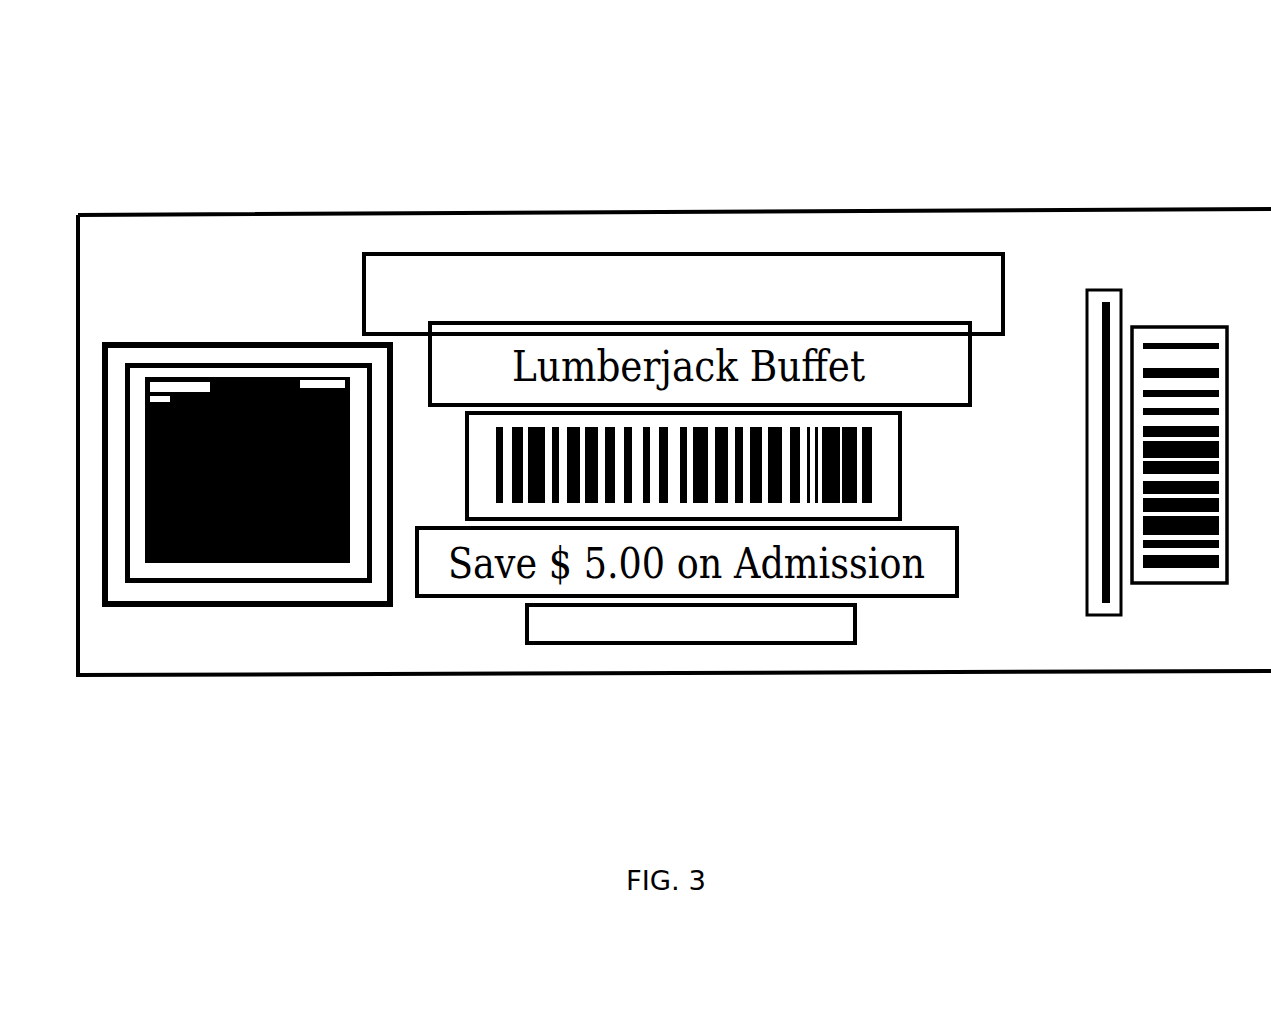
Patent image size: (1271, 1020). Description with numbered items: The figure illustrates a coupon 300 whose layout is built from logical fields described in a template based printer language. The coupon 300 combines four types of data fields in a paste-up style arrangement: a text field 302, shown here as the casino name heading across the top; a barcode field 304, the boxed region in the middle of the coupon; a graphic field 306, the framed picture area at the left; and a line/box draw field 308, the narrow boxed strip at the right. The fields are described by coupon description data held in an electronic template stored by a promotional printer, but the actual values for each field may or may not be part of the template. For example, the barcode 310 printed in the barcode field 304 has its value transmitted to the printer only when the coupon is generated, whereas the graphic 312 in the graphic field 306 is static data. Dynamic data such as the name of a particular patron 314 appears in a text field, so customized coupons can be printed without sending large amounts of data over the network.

The coupon 300 is at (1043, 150).
The text field 302 is at (1003, 270).
The barcode field 304 is at (757, 478).
The graphic field 306 is at (268, 479).
The line/box draw field 308 is at (1083, 547).
The barcode 310 is at (872, 488).
The graphic 312 is at (298, 563).
The name of a particular patron 314 is at (855, 630).